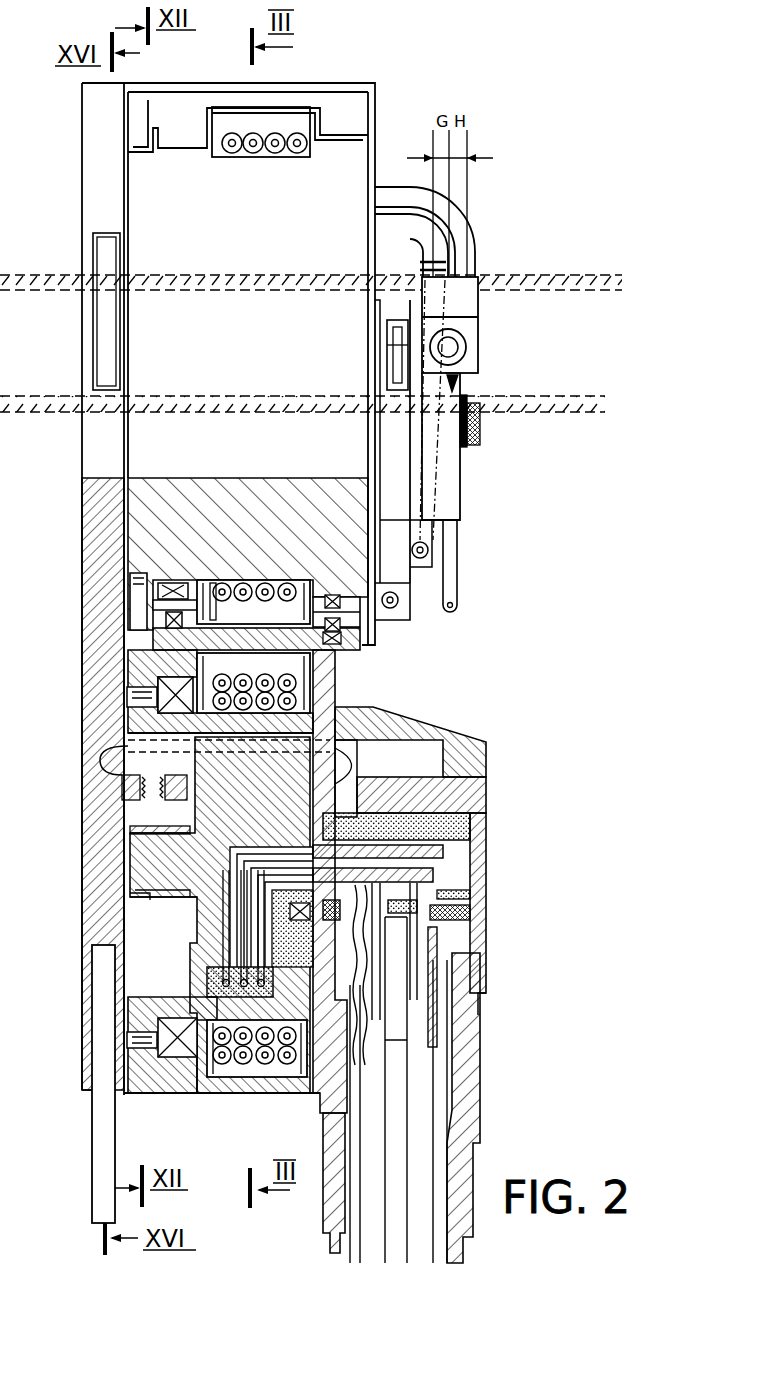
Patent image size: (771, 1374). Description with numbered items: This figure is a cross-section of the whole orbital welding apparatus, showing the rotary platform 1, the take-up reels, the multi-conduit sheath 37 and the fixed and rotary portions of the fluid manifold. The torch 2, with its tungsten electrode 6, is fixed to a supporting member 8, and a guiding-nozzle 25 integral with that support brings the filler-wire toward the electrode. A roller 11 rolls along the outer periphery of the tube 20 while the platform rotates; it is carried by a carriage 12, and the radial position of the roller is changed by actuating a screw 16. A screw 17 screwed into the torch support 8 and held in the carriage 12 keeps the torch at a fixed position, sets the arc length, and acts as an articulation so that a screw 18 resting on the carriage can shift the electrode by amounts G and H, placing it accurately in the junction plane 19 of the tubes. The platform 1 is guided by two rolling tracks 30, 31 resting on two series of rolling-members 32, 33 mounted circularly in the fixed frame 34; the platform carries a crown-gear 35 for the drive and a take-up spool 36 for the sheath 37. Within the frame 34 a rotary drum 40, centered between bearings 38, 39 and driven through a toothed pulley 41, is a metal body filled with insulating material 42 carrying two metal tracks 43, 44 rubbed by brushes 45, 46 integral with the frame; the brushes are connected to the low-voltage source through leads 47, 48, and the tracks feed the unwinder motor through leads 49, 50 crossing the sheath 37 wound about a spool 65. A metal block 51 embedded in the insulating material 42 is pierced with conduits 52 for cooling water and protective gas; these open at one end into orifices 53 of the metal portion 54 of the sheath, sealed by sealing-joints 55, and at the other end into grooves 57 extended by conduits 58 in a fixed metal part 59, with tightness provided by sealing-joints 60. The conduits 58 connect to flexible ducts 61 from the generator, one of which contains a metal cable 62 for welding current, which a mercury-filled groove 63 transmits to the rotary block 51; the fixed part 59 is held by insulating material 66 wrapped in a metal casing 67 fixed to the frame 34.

The rotary platform 1 is at (361, 152).
The torch 2 is at (470, 326).
The tungsten electrode 6 is at (466, 347).
The supporting member 8 is at (435, 472).
The roller 11 is at (400, 314).
The carriage 12 is at (375, 445).
The screw 16 is at (400, 603).
The screw 17 is at (430, 548).
The screw 18 is at (480, 440).
The junction plane 19 is at (482, 425).
The tube 20 is at (582, 278).
The guiding-nozzle 25 is at (460, 380).
The rolling track 30 is at (163, 580).
The rolling track 31 is at (315, 590).
The rolling members 32 is at (180, 630).
The rolling members 33 is at (335, 642).
The fixed frame 34 is at (130, 667).
The crown-gear 35 is at (140, 567).
The take-up spool 36 is at (228, 660).
The multi-conduit sheath 37 is at (287, 585).
The bearing 38 is at (352, 760).
The bearing 39 is at (157, 713).
The rotary drum 40 is at (130, 1012).
The toothed pulley 41 is at (133, 1047).
The insulating material 42 is at (137, 853).
The metal track 43 is at (140, 833).
The metal track 44 is at (167, 820).
The brush 45 is at (123, 798).
The brush 46 is at (120, 773).
The lead 47 is at (323, 1105).
The lead 48 is at (330, 1116).
The lead 49 is at (212, 870).
The lead 50 is at (150, 897).
The metal block 51 is at (433, 850).
The conduits 52 is at (238, 923).
The orifices 53 is at (227, 980).
The metal portion 54 is at (233, 1077).
The sealing-joints 55 is at (217, 960).
The grooves 57 is at (483, 818).
The conduits 58 is at (437, 923).
The fixed metal part 59 is at (433, 877).
The sealing-joints 60 is at (443, 897).
The flexible ducts 61 is at (423, 1090).
The metal cable 62 is at (380, 1017).
The groove 63 is at (447, 915).
The spool 65 is at (217, 585).
The insulating material 66 is at (358, 800).
The metal casing 67 is at (432, 790).